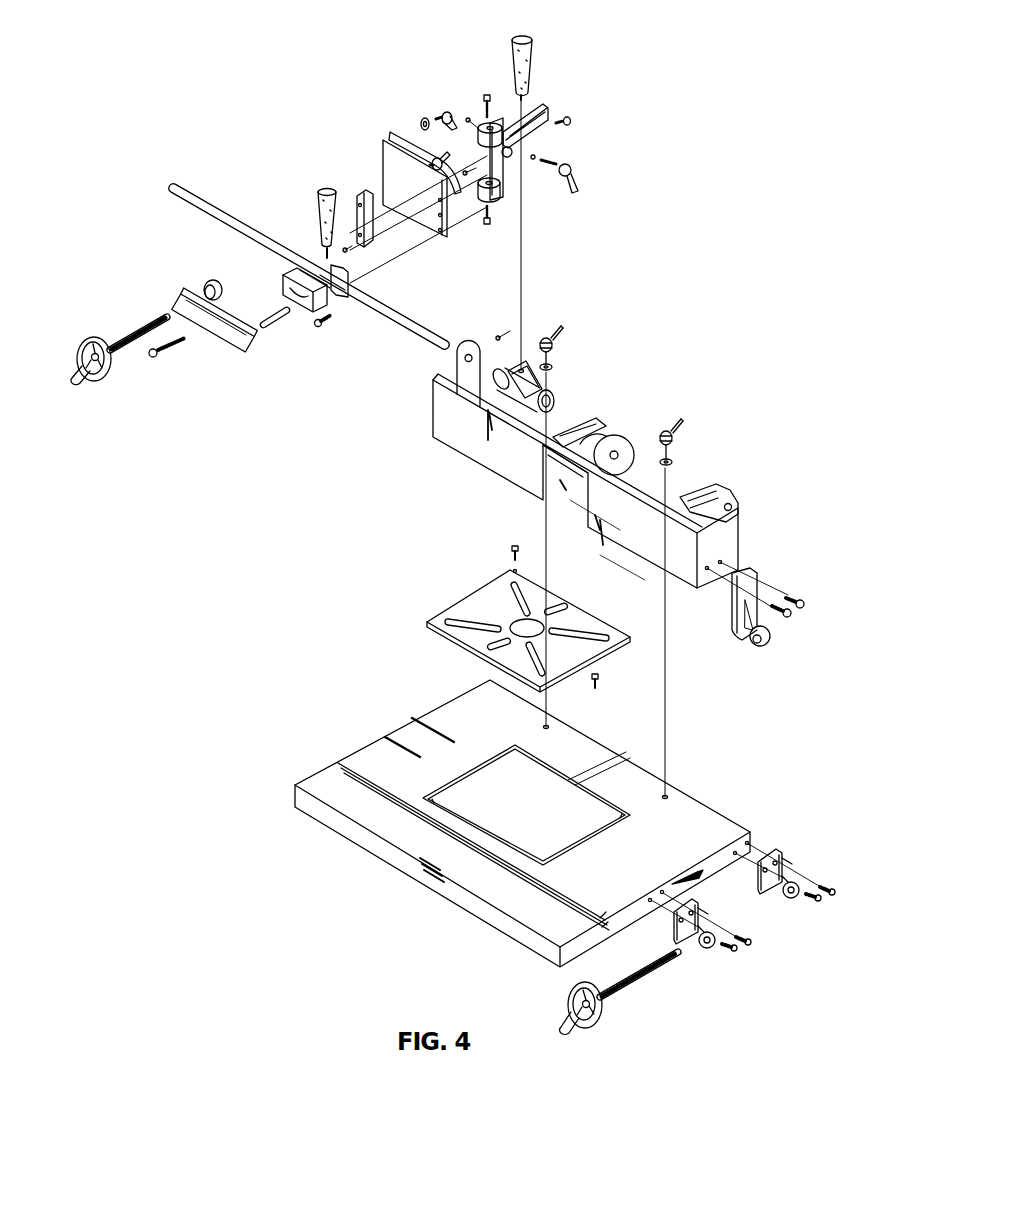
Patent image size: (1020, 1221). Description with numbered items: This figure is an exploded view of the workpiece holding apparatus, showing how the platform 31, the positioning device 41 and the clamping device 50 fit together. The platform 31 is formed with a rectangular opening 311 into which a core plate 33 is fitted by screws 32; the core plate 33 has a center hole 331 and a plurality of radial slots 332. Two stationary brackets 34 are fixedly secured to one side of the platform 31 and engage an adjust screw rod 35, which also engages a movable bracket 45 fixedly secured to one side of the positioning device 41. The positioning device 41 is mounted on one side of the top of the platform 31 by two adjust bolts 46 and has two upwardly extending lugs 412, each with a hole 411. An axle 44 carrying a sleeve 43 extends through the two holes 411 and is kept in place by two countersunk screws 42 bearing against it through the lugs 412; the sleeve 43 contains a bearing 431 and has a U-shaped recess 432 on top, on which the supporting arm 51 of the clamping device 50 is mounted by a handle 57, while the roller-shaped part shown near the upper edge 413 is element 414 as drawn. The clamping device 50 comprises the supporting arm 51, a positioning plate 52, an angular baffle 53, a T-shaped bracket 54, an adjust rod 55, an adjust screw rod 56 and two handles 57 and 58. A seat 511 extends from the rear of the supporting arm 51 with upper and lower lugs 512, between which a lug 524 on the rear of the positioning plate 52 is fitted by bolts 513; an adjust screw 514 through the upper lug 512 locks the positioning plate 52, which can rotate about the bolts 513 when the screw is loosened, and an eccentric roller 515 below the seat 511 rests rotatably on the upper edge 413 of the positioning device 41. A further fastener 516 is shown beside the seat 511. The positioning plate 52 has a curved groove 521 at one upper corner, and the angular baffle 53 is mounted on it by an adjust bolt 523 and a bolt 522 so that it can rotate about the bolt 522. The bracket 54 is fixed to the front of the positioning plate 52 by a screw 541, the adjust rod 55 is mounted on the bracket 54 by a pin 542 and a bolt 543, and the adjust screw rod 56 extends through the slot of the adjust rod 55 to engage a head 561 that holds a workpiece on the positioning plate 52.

The platform 31 is at (390, 827).
The rectangular opening 311 is at (580, 832).
The screws 32 is at (600, 680).
The core plate 33 is at (521, 619).
The center hole 331 is at (530, 622).
The radial slots 332 is at (587, 630).
The stationary brackets 34 is at (807, 895).
The adjust screw rod 35 is at (608, 1010).
The positioning device 41 is at (487, 448).
The hole 411 is at (733, 510).
The lugs 412 is at (730, 498).
The upper edge 413 is at (577, 457).
The roller 414 is at (610, 463).
The countersunk screws 42 is at (686, 456).
The sleeve 43 is at (504, 376).
The bearing 431 is at (550, 390).
The U-shaped recess 432 is at (523, 386).
The axle 44 is at (215, 200).
The movable bracket 45 is at (742, 640).
The adjust bolts 46 is at (563, 325).
The clamping device 50 is at (272, 108).
The supporting arm 51 is at (564, 150).
The seat 511 is at (513, 130).
The lugs 512 is at (498, 193).
The bolts 513 is at (487, 95).
The adjust screw 514 is at (577, 172).
The eccentric roller 515 is at (508, 155).
The screw 516 is at (571, 123).
The positioning plate 52 is at (410, 183).
The curved groove 521 is at (448, 192).
The bolt 522 is at (350, 252).
The adjust bolt 523 is at (447, 110).
The lug 524 is at (443, 163).
The angular baffle 53 is at (357, 205).
The bracket 54 is at (293, 320).
The screw 541 is at (327, 327).
The pin 542 is at (273, 327).
The bolt 543 is at (170, 347).
The adjust rod 55 is at (233, 352).
The adjust screw rod 56 is at (146, 313).
The head 561 is at (207, 283).
The handle 57 is at (532, 52).
The handle 58 is at (318, 213).